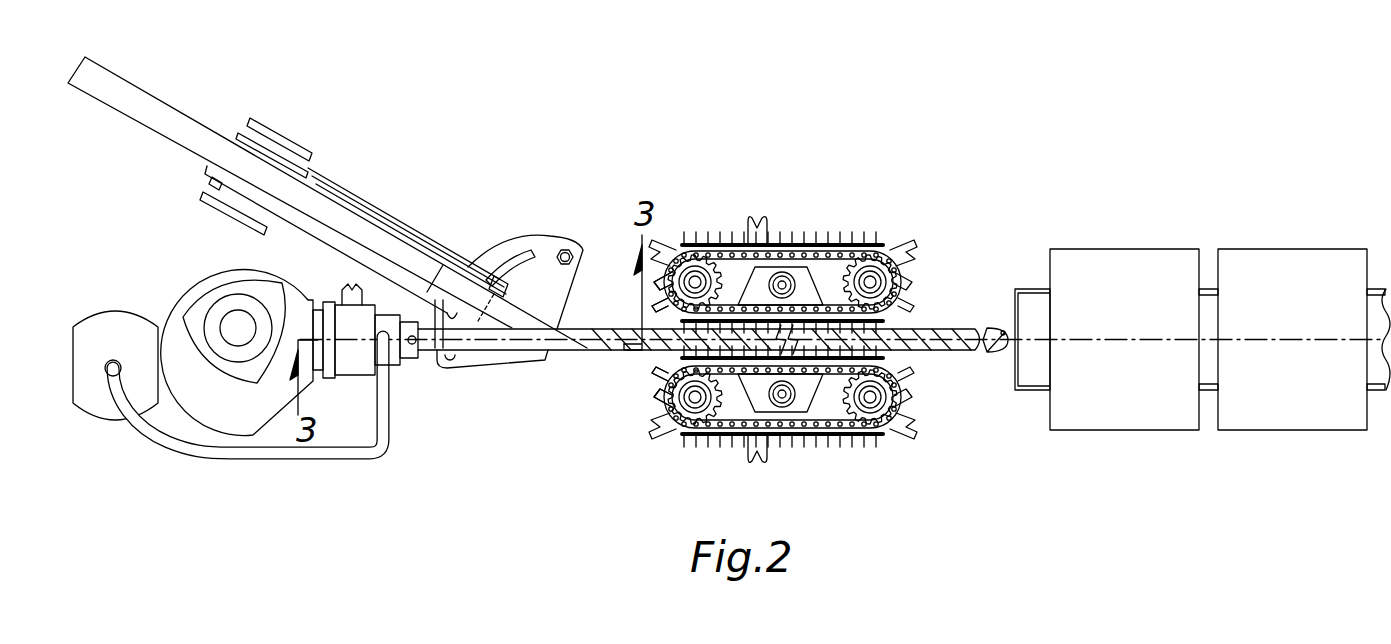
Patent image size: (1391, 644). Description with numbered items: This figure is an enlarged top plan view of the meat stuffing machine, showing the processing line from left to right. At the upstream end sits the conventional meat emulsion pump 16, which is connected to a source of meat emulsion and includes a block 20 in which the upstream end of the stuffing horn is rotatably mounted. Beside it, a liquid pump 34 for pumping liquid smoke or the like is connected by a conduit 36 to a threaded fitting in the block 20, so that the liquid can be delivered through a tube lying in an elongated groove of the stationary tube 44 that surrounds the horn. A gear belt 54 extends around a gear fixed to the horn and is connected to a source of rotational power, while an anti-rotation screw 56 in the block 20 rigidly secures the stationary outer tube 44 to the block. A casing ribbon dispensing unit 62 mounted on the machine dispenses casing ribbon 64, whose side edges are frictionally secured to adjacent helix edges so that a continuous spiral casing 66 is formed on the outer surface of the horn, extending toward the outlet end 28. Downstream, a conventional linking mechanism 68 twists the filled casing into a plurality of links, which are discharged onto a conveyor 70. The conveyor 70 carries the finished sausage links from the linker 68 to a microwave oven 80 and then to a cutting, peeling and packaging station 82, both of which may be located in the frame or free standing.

The meat emulsion pump 16 is at (213, 283).
The block 20 is at (355, 322).
The outlet end of stuffing horn 28 is at (636, 352).
The liquid pump 34 is at (123, 313).
The conduit 36 is at (215, 458).
The stationary tube 44 is at (476, 364).
The gear belt 54 is at (352, 290).
The anti-rotation screw 56 is at (412, 352).
The casing ribbon dispensing unit 62 is at (190, 117).
The casing ribbon 64 is at (500, 318).
The spiral casing 66 is at (585, 338).
The linking mechanism 68 is at (848, 233).
The conveyor 70 is at (1030, 306).
The microwave oven 80 is at (1113, 256).
The cutting, peeling and packaging station 82 is at (1281, 256).